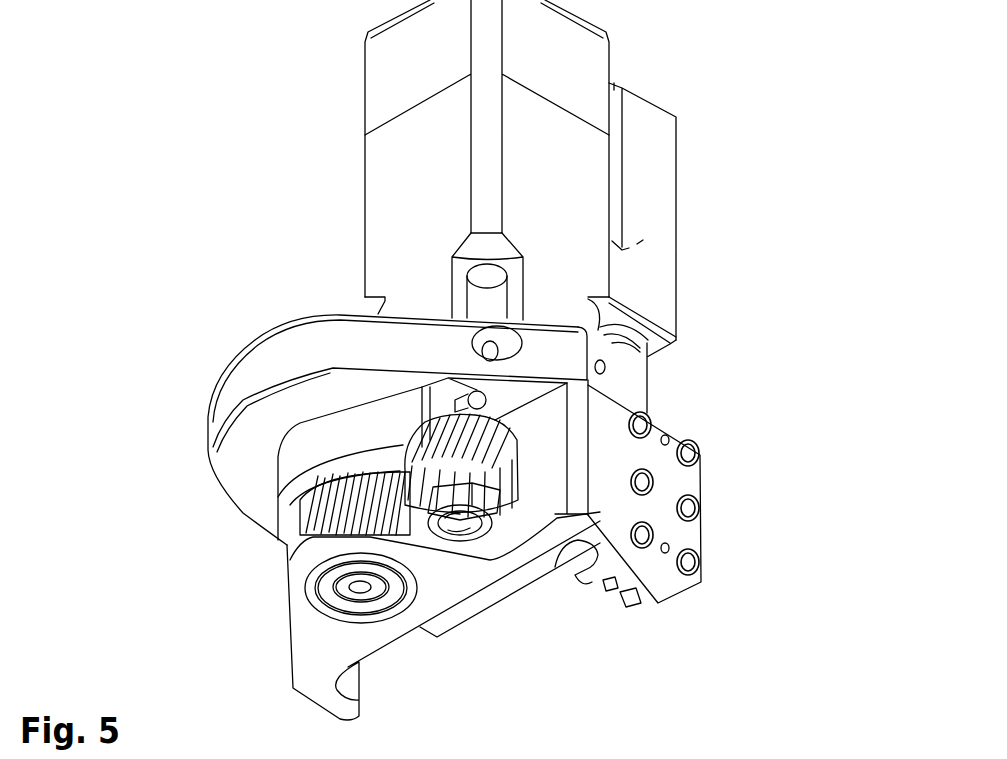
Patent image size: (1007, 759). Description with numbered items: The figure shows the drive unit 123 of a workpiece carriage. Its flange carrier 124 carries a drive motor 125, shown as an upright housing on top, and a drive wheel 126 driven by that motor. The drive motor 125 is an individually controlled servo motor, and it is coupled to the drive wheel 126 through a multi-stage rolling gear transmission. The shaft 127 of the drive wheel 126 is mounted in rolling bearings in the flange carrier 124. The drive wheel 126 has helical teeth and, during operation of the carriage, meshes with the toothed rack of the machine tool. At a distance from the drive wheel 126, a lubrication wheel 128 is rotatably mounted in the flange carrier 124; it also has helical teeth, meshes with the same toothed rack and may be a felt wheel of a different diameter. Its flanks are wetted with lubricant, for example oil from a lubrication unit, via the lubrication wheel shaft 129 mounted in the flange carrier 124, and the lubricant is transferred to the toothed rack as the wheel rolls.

The drive unit 123 is at (238, 337).
The flange carrier 124 is at (290, 463).
The drive motor 125 is at (423, 161).
The drive wheel 126 is at (310, 526).
The shaft 127 is at (360, 587).
The lubrication wheel 128 is at (488, 446).
The lubrication wheel shaft 129 is at (463, 523).